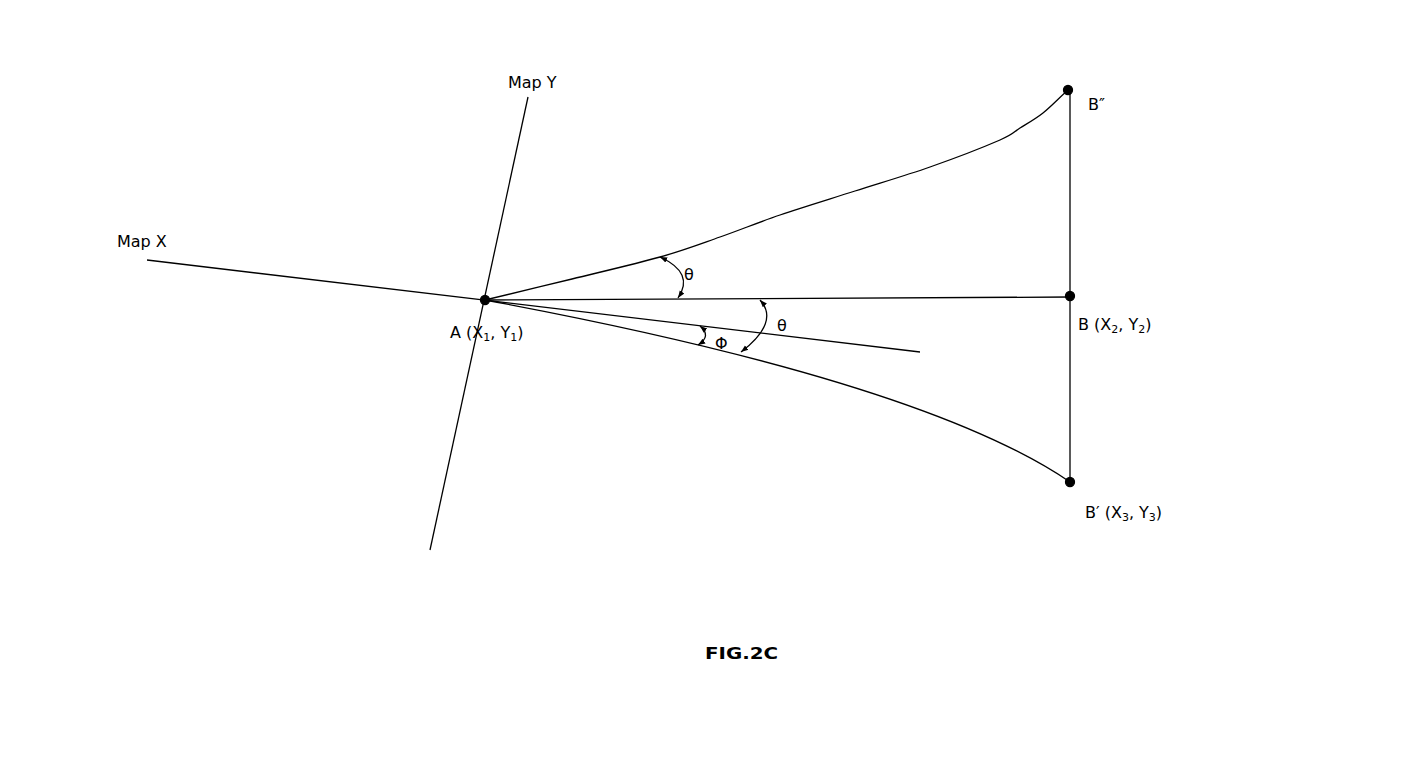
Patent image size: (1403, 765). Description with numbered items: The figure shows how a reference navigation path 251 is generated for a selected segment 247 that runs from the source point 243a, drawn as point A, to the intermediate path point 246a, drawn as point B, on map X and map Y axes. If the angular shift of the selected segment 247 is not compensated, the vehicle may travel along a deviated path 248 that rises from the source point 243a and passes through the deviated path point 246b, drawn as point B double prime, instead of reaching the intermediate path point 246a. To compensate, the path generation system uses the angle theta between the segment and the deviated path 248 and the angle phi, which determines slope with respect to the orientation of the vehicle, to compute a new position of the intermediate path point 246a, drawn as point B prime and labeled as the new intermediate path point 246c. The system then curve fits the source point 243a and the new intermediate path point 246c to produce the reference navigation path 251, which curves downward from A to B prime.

The source point 243a is at (485, 300).
The intermediate path point 246a is at (1070, 295).
The deviated path point 246b is at (1068, 90).
The new position of the intermediate path point 246c is at (1070, 482).
The selected segment 247 is at (557, 298).
The deviated path 248 is at (925, 168).
The reference navigation path 251 is at (861, 390).